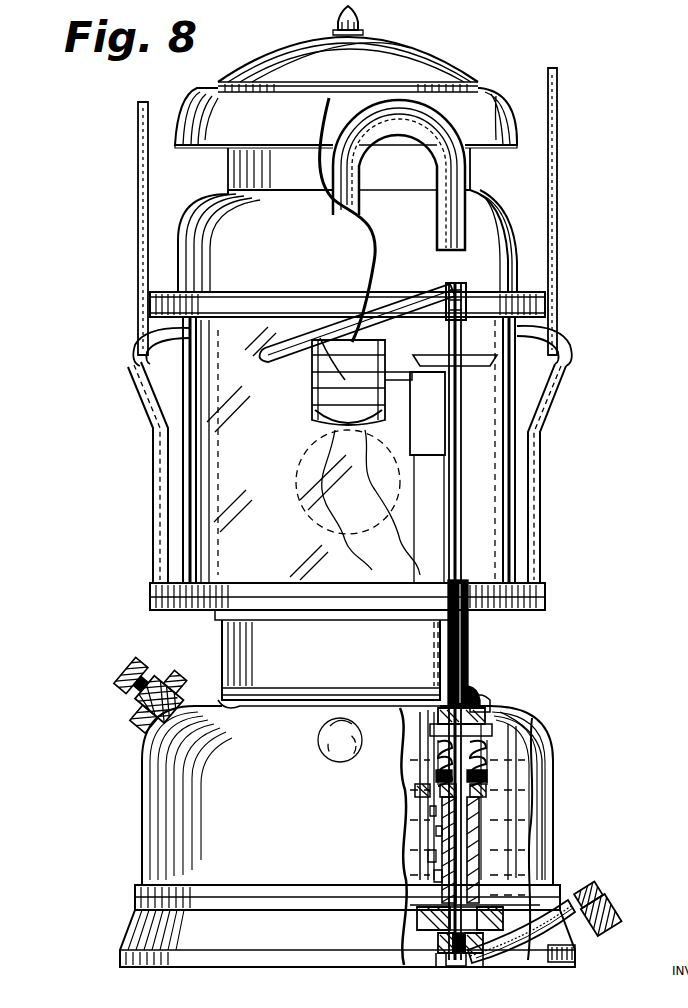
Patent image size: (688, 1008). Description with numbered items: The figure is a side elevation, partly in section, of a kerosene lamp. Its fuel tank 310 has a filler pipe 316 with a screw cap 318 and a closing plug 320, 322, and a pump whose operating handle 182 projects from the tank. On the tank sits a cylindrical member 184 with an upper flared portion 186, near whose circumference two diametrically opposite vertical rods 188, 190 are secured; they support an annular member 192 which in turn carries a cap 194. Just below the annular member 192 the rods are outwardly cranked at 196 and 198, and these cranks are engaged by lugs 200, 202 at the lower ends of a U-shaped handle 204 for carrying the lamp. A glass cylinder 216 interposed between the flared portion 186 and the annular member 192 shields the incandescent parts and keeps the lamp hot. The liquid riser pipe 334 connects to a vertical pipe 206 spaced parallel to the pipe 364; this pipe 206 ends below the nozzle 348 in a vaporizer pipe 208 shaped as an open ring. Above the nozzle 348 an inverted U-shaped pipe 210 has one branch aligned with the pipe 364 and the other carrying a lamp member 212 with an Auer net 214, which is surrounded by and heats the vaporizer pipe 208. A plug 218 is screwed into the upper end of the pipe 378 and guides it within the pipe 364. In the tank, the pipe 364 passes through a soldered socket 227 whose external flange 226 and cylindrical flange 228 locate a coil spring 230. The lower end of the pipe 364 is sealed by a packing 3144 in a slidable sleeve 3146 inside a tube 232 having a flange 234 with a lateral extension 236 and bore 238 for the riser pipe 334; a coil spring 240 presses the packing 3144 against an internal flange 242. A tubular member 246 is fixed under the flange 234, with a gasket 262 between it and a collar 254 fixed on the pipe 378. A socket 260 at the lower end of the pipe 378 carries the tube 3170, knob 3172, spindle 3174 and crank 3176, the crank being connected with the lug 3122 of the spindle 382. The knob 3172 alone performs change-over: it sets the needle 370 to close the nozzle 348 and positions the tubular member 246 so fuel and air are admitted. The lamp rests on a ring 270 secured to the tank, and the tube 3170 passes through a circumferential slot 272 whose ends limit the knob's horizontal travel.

The pump operating handle 182 is at (322, 748).
The cylindrical member 184 is at (222, 650).
The flared portion 186 is at (150, 596).
The vertical rod 188 is at (156, 520).
The vertical rod 190 is at (541, 496).
The annular member 192 is at (150, 306).
The cap 194 is at (185, 241).
The crank 196 is at (152, 408).
The crank 198 is at (560, 404).
The lug 200 is at (134, 360).
The lug 202 is at (572, 360).
The U-shaped handle 204 is at (556, 116).
The vertical pipe 206 is at (406, 540).
The vaporizer pipe 208 is at (288, 372).
The inverted U-shaped pipe 210 is at (427, 134).
The lamp member 212 is at (310, 410).
The Auer net 214 is at (316, 464).
The glass cylinder 216 is at (185, 458).
The plug 218 is at (512, 218).
The external flange 226 is at (490, 712).
The socket 227 is at (486, 700).
The cylindrical flange 228 is at (486, 726).
The coil spring 230 is at (488, 756).
The tube 232 is at (436, 760).
The flange 234 is at (480, 826).
The lateral extension 236 is at (430, 812).
The bore 238 is at (436, 830).
The coil spring 240 is at (488, 806).
The internal flange 242 is at (421, 760).
The tubular member 246 is at (482, 846).
The collar 254 is at (430, 908).
The socket 260 is at (436, 958).
The gasket 262 is at (436, 876).
The ring 270 is at (135, 926).
The circumferential slot 272 is at (576, 954).
The fuel tank 310 is at (185, 855).
The filler pipe 316 is at (134, 730).
The screw cap 318 is at (140, 714).
The closing plug 320 is at (138, 690).
The closing plug 322 is at (120, 674).
The liquid riser pipe 334 is at (430, 856).
The nozzle 348 is at (466, 297).
The pipe 364 is at (470, 560).
The needle 370 is at (450, 290).
The pipe 378 is at (476, 643).
The spindle 382 is at (436, 938).
The lug 3122 is at (448, 962).
The packing 3144 is at (488, 786).
The slidable sleeve 3146 is at (488, 768).
The tube 3170 is at (552, 952).
The knob 3172 is at (614, 930).
The spindle 3174 is at (500, 956).
The crank 3176 is at (462, 953).